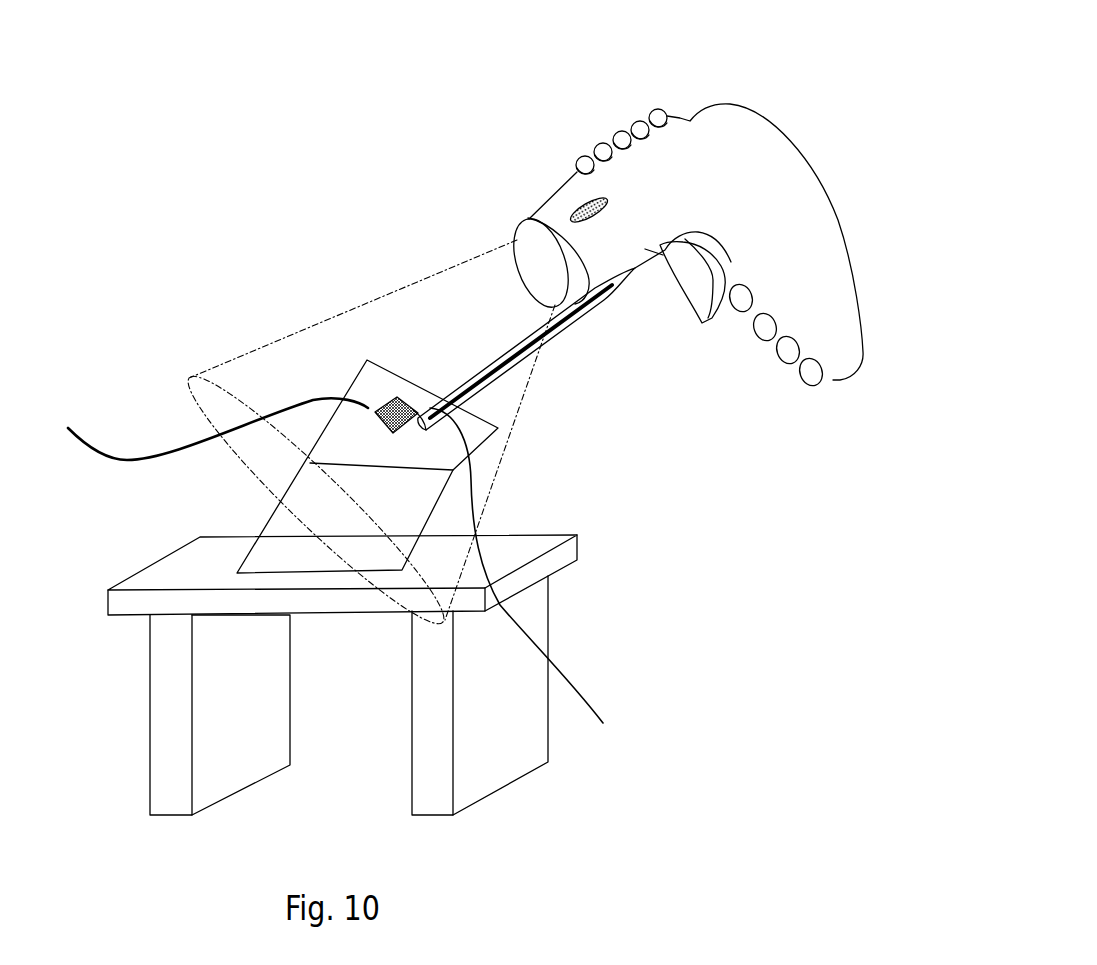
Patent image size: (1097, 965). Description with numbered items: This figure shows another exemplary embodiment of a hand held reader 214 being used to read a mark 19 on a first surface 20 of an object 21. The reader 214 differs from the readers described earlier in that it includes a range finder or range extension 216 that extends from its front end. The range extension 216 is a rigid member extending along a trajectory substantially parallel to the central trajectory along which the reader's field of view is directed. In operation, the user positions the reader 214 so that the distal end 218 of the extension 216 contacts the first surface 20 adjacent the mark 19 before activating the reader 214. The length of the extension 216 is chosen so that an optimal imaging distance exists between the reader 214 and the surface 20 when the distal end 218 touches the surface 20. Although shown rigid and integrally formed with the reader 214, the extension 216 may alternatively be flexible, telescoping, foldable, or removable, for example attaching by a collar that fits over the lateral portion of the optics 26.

The mark 19 is at (523, 580).
The first surface 20 is at (211, 429).
The object 21 is at (293, 540).
The optics 26 is at (513, 257).
The hand held reader 214 is at (718, 183).
The range extension 216 is at (507, 369).
The distal end 218 is at (413, 410).